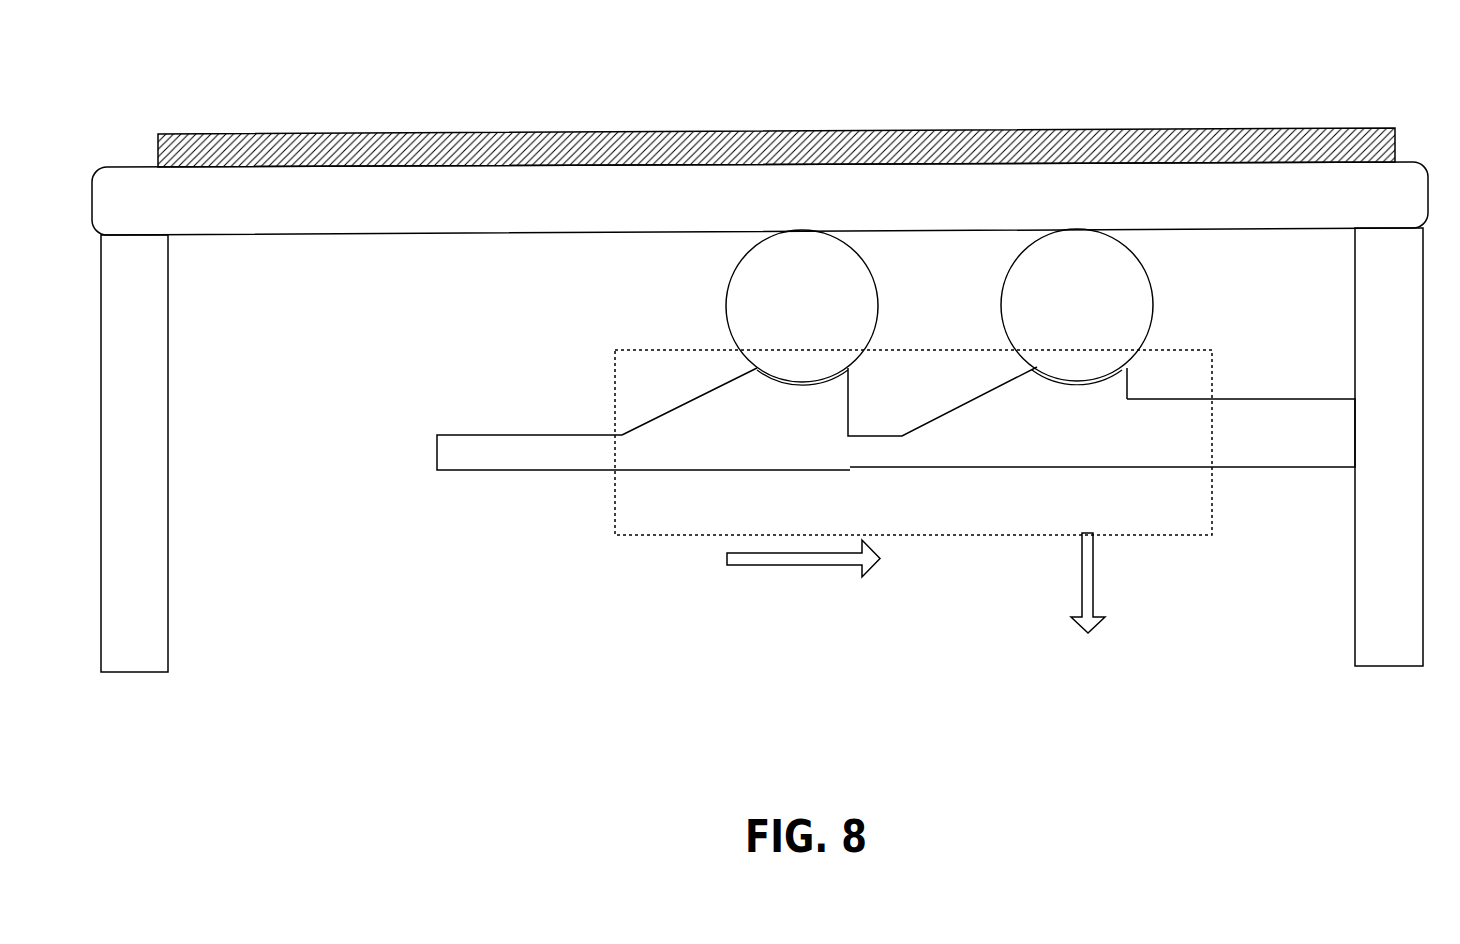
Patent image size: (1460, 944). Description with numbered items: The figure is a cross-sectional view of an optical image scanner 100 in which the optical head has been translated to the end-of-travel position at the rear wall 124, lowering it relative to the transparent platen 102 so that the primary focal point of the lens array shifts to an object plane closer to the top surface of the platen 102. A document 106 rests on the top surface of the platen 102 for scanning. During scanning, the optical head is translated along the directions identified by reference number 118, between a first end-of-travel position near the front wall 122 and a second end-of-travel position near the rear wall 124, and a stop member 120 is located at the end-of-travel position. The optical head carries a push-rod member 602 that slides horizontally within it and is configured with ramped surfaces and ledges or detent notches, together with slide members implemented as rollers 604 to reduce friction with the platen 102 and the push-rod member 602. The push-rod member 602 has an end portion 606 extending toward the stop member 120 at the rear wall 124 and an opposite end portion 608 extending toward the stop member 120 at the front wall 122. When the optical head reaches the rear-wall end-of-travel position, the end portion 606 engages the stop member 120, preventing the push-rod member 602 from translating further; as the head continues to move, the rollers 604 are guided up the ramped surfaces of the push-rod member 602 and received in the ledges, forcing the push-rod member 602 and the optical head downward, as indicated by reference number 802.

The optical image scanner 100 is at (1297, 101).
The transparent platen 102 is at (262, 235).
The document 106 is at (1128, 128).
The translation directions 118 is at (812, 565).
The stop member 120 is at (761, 502).
The front wall 122 is at (151, 690).
The rear wall 124 is at (1397, 682).
The push-rod member 602 is at (508, 399).
The rollers 604 is at (700, 292).
The end portion 606 is at (1296, 467).
The end portion 608 is at (507, 470).
The downward motion 802 is at (1093, 567).